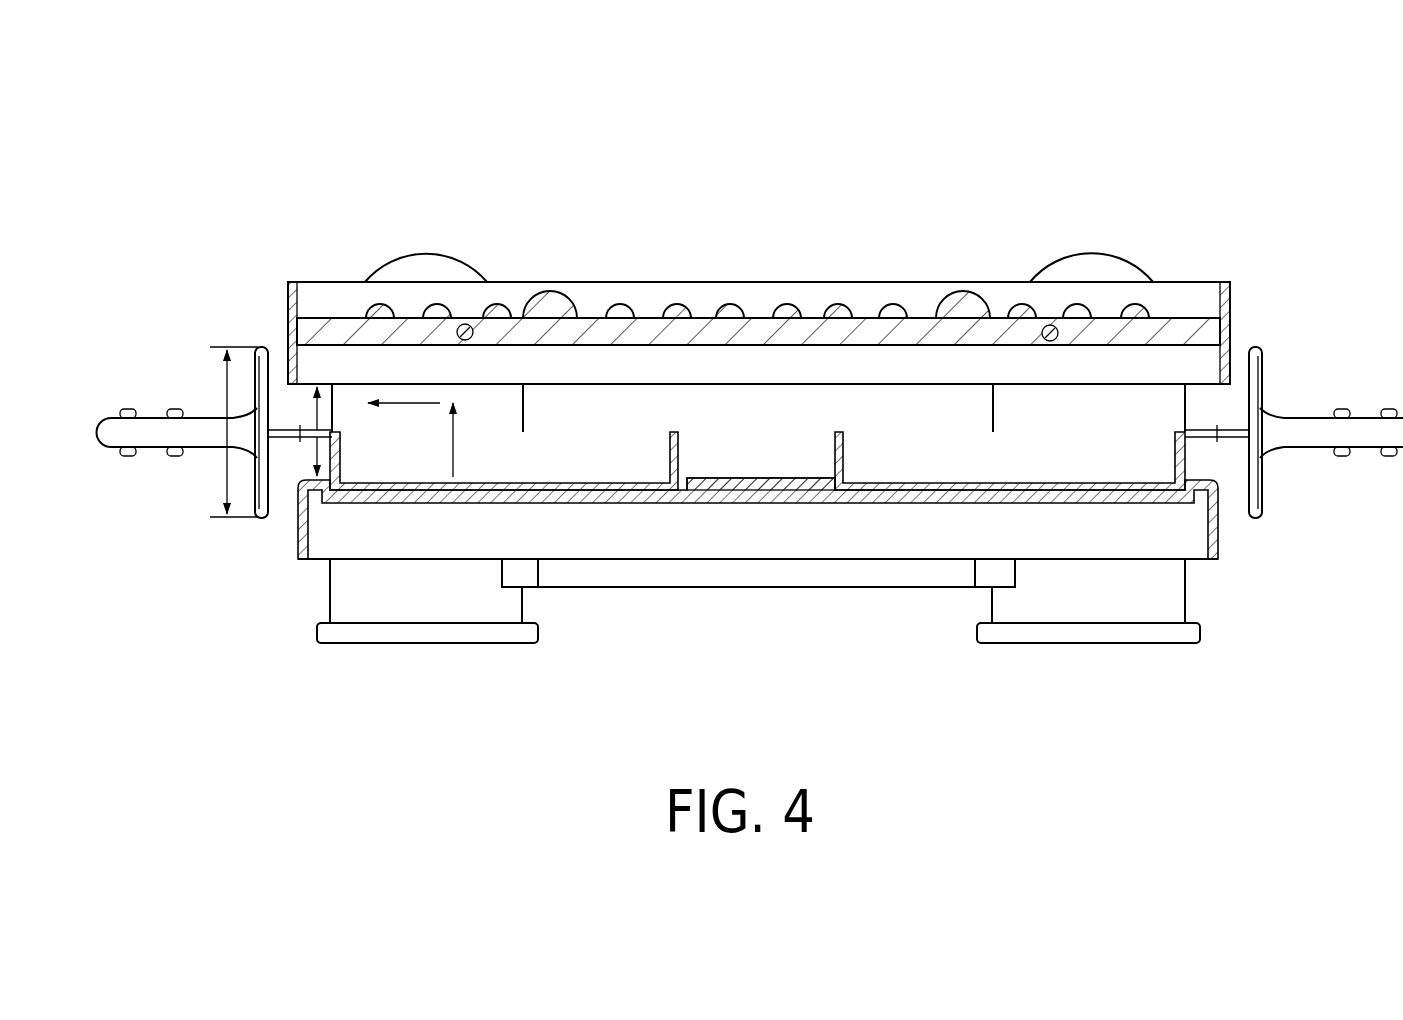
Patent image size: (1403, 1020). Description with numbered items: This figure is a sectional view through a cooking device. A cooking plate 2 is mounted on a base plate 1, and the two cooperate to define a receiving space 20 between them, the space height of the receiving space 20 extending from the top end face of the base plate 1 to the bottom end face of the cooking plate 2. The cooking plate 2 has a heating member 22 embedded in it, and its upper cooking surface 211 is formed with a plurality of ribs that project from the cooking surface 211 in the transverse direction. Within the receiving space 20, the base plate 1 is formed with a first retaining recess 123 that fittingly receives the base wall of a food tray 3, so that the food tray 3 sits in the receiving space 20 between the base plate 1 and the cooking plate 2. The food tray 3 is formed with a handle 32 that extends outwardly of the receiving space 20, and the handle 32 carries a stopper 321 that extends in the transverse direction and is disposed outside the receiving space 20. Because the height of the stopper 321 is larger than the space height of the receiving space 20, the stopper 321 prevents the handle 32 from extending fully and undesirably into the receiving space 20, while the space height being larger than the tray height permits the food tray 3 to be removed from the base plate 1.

The base plate 1 is at (758, 596).
The cooking plate 2 is at (759, 256).
The food tray 3 is at (750, 442).
The receiving space 20 is at (747, 447).
The heating member 22 is at (469, 325).
The handle 32 is at (207, 450).
The first retaining recess 123 is at (597, 495).
The cooking surface 211 is at (1163, 320).
The stopper 321 is at (258, 368).